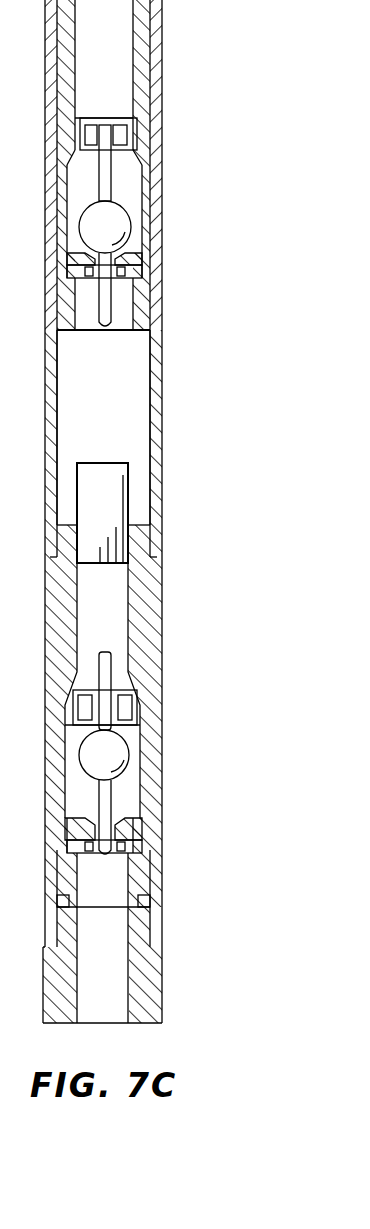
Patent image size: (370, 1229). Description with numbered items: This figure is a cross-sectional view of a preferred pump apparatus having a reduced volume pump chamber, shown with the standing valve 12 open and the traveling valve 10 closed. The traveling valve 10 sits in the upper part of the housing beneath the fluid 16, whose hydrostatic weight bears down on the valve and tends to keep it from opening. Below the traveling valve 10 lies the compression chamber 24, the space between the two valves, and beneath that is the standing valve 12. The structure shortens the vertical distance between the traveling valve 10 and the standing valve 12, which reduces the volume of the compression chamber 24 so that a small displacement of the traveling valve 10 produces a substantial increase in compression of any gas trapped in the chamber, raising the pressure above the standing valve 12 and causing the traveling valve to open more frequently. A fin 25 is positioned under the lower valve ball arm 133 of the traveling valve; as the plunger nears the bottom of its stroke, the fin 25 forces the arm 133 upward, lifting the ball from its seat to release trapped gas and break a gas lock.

The fluid 16 is at (117, 62).
The traveling valve 10 is at (122, 182).
The lower valve ball arm 133 is at (104, 310).
The compression chamber 24 is at (118, 420).
The fin 25 is at (117, 500).
The standing valve 12 is at (130, 787).